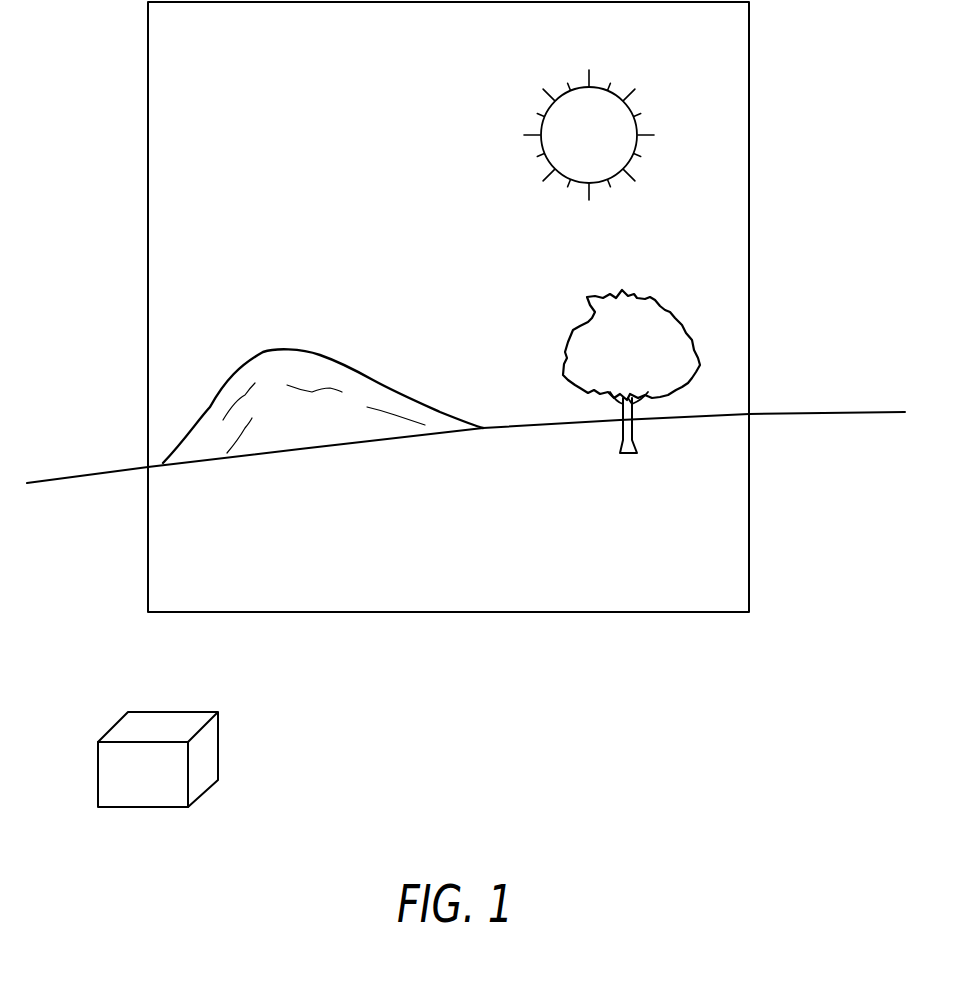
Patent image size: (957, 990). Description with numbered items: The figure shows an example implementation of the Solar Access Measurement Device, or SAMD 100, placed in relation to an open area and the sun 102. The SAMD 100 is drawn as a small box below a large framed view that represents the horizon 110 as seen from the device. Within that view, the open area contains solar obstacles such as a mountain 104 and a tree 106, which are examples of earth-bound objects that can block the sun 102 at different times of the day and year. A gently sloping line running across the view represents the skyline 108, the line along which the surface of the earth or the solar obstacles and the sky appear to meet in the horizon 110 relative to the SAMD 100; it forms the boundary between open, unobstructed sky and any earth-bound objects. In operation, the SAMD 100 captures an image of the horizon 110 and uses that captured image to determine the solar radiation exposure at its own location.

The Solar Access Measurement Device 100 is at (205, 753).
The sun 102 is at (617, 117).
The mountain 104 is at (265, 352).
The tree 106 is at (633, 322).
The skyline 108 is at (96, 470).
The horizon 110 is at (259, 87).